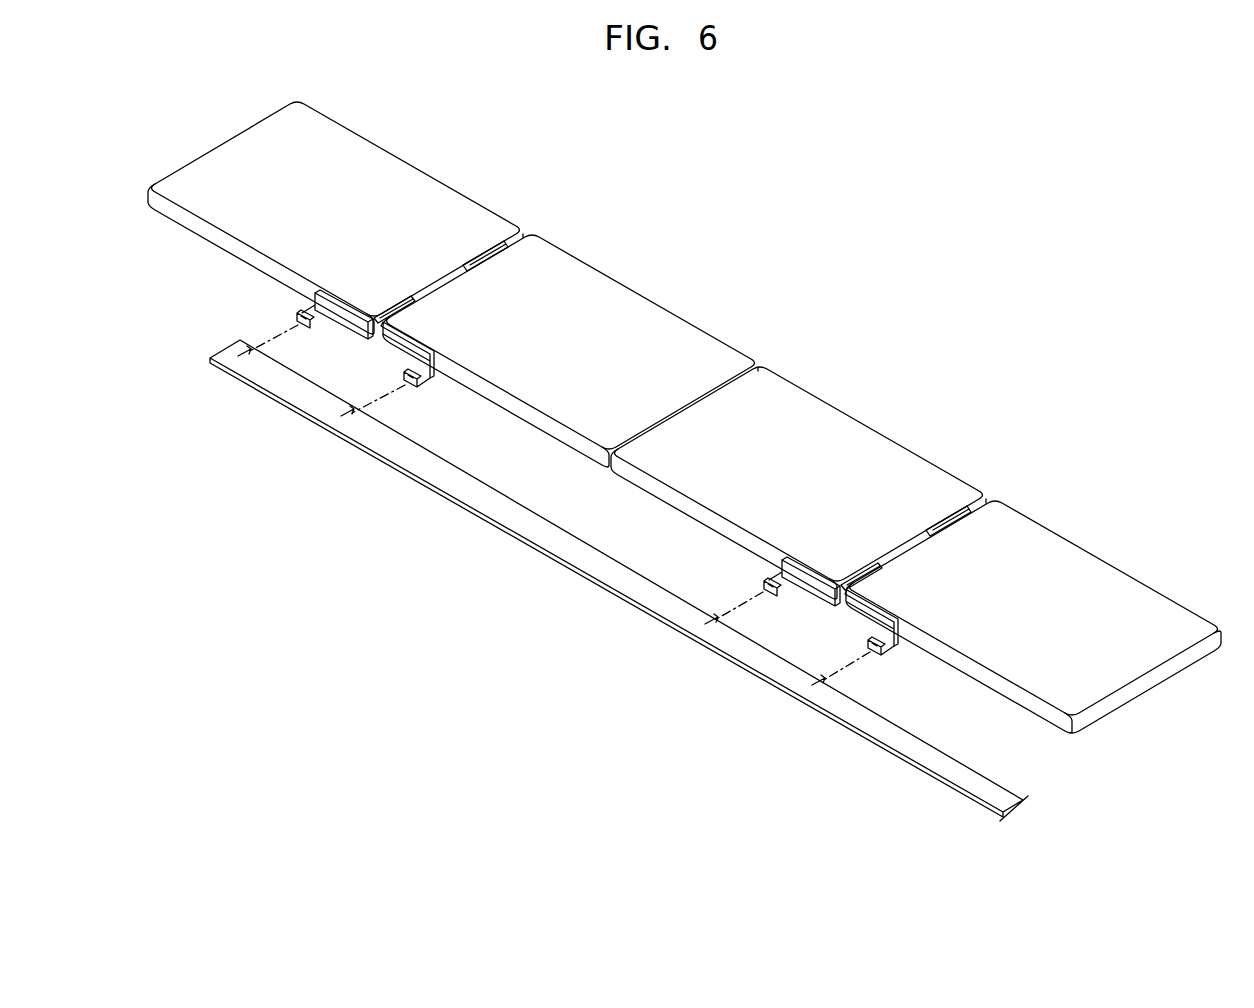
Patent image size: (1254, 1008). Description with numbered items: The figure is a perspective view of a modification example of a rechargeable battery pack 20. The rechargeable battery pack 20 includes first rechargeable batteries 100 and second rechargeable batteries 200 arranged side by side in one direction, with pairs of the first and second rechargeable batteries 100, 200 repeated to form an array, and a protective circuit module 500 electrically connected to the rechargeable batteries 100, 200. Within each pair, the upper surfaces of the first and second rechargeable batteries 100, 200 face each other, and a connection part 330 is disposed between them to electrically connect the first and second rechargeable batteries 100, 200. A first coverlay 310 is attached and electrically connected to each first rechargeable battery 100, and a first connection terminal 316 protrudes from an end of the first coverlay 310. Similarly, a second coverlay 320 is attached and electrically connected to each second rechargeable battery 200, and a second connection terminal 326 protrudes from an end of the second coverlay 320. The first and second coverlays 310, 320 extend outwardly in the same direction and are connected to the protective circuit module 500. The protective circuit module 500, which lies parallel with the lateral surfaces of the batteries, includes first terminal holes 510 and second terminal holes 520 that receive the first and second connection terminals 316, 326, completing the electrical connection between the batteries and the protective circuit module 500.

The rechargeable battery pack 20 is at (992, 301).
The first rechargeable battery 100 is at (385, 168).
The second rechargeable battery 200 is at (618, 305).
The first coverlay 310 is at (348, 322).
The first connection terminal 316 is at (299, 317).
The second coverlay 320 is at (420, 342).
The second connection terminal 326 is at (419, 385).
The connection part 330 is at (483, 266).
The protective circuit module 500 is at (462, 480).
The first terminal hole 510 is at (240, 353).
The second terminal hole 520 is at (345, 414).